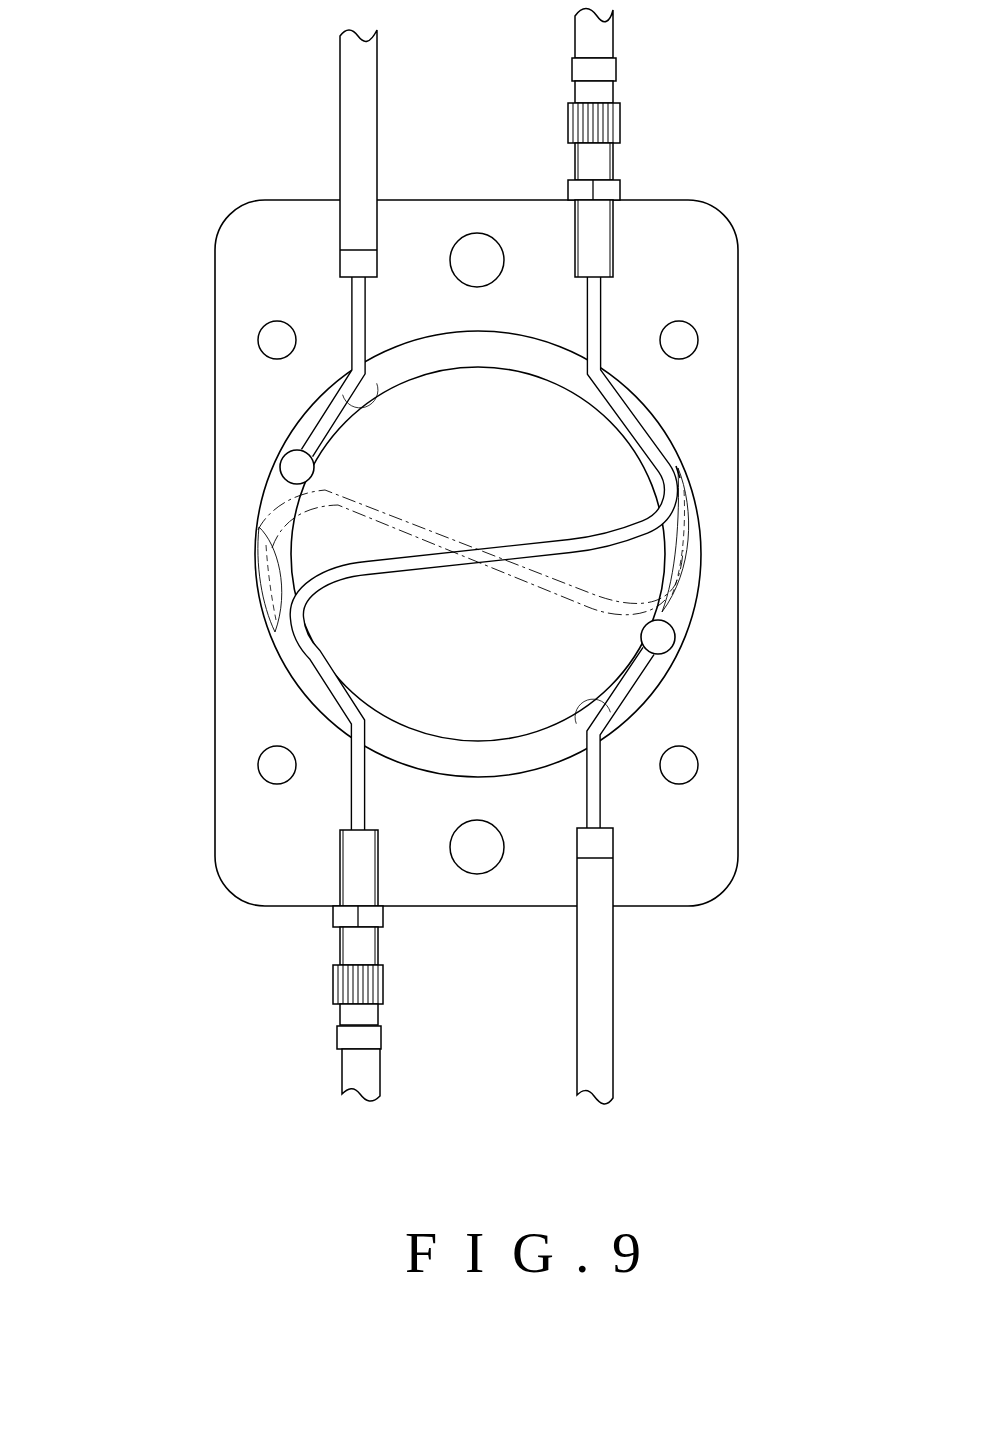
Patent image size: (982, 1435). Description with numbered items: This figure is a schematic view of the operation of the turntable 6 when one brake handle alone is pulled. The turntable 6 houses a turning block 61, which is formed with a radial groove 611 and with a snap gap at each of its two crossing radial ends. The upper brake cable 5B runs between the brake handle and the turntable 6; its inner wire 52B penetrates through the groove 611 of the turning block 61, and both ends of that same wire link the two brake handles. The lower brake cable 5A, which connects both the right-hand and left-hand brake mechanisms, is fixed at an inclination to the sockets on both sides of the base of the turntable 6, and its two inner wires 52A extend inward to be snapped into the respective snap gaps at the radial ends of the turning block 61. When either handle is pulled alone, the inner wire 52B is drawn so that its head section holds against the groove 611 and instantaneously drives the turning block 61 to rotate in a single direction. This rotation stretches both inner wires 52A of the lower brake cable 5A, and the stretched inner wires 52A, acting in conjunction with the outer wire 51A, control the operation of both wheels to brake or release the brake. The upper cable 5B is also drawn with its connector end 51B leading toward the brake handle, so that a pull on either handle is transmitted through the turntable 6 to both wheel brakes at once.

The brake cable 5A is at (470, 567).
The outer wire 51A is at (368, 207).
The inner wire 52A is at (327, 422).
The brake cable 5B is at (444, 553).
The second tube with connector 51B is at (597, 38).
The inner wire 52B is at (617, 412).
The turntable 6 is at (720, 520).
The turning block 61 is at (587, 641).
The groove 611 is at (482, 545).